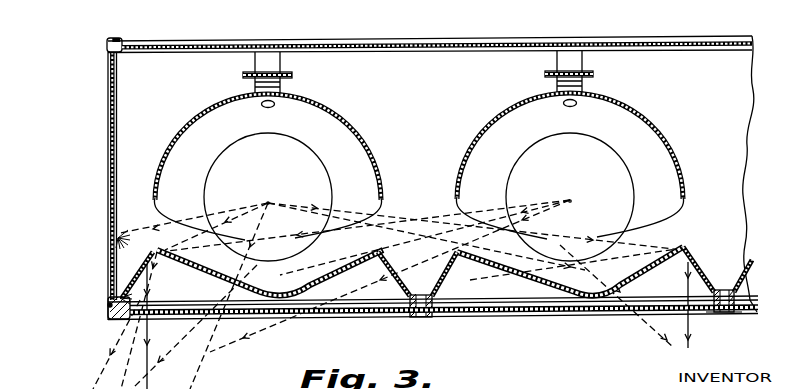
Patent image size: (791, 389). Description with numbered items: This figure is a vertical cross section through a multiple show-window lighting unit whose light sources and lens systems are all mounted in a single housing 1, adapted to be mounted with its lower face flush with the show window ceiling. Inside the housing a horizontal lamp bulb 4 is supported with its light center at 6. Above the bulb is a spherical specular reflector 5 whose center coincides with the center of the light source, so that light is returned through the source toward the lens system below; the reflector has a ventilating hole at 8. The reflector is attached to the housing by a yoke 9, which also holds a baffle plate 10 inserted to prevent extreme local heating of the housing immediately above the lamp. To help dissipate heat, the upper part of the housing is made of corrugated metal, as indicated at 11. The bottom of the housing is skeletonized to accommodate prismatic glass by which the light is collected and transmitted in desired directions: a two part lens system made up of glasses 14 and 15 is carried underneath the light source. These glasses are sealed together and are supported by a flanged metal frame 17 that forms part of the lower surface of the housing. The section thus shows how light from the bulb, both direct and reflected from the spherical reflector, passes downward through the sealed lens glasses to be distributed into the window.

The housing 1 is at (136, 41).
The corrugated metal 11 is at (401, 41).
The yoke 9 is at (281, 58).
The baffle plate 10 is at (243, 75).
The ventilating hole 8 is at (262, 104).
The spherical specular reflector 5 is at (363, 156).
The lamp bulb 4 is at (299, 152).
The light center 6 is at (268, 202).
The lens glass 14 is at (402, 268).
The lens glass 15 is at (370, 314).
The flanged metal frame 17 is at (421, 314).